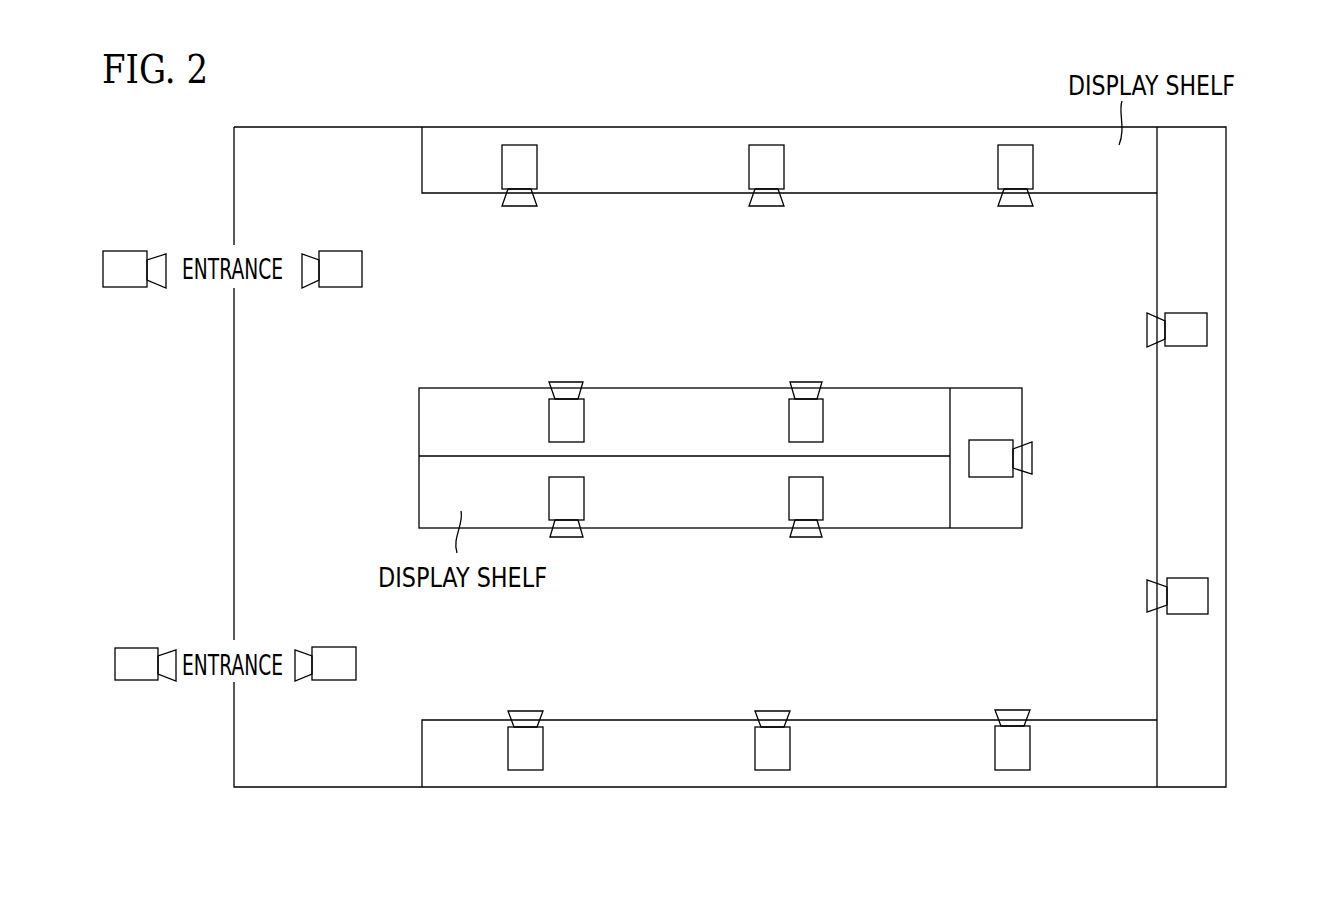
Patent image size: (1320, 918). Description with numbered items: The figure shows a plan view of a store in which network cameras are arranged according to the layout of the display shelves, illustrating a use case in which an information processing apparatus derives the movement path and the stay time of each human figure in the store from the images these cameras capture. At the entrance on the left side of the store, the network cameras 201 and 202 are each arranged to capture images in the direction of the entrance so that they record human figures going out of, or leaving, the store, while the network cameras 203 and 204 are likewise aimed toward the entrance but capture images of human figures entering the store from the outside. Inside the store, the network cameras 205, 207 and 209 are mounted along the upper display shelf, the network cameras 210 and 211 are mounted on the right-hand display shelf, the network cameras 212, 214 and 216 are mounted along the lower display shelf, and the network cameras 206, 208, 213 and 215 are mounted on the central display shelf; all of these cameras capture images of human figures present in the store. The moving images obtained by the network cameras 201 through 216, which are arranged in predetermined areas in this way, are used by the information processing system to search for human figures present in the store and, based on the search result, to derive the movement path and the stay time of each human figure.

The network camera 201 is at (125, 249).
The network camera 202 is at (134, 646).
The network camera 203 is at (341, 249).
The network camera 204 is at (331, 646).
The network camera 205 is at (518, 145).
The network camera 206 is at (564, 381).
The network camera 207 is at (765, 145).
The network camera 208 is at (804, 381).
The network camera 209 is at (1013, 145).
The network camera 210 is at (1207, 328).
The network camera 211 is at (1208, 593).
The network camera 212 is at (1013, 772).
The network camera 213 is at (806, 539).
The network camera 214 is at (774, 772).
The network camera 215 is at (566, 539).
The network camera 216 is at (527, 772).